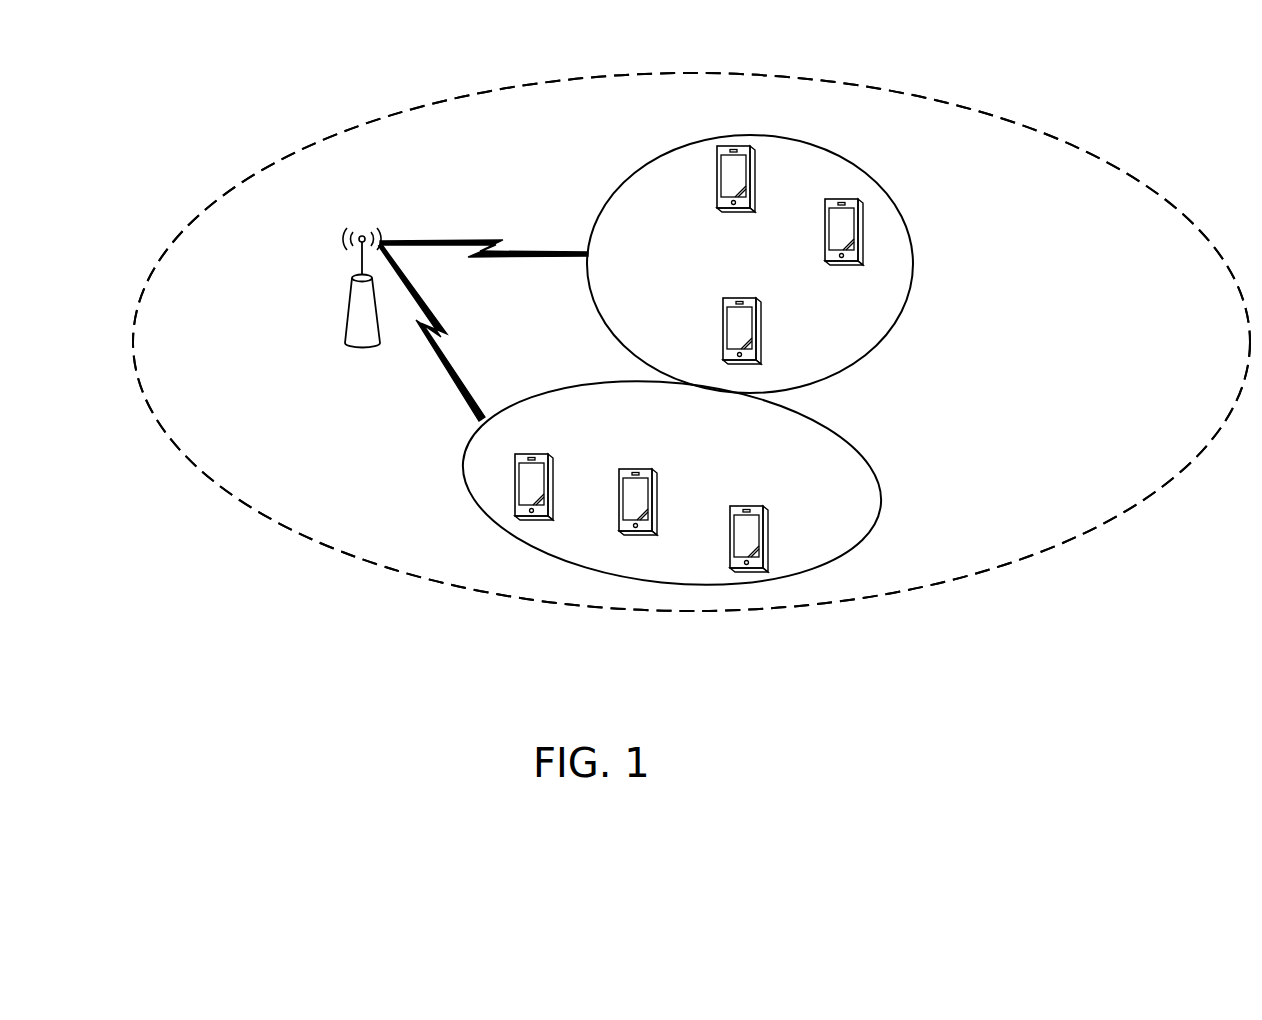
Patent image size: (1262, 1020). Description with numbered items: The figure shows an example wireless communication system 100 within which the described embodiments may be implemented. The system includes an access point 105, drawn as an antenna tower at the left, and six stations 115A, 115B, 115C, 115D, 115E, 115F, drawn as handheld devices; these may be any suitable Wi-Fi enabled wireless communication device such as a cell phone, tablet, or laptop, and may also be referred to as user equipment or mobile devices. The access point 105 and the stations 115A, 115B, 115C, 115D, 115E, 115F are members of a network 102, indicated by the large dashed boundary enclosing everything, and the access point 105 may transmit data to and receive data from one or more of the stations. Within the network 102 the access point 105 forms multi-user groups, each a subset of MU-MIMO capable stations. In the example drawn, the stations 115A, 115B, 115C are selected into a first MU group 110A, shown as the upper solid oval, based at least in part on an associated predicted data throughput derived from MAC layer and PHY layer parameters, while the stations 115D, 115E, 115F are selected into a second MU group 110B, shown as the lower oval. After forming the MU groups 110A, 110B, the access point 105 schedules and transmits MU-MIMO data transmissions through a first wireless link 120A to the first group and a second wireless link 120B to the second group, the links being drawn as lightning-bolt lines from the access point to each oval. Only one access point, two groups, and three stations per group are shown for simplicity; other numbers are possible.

The wireless communication system 100 is at (1052, 78).
The network 102 is at (670, 612).
The access point 105 is at (345, 330).
The MU group 110A is at (913, 286).
The MU group 110B is at (877, 493).
The station 115A is at (747, 146).
The station 115B is at (850, 199).
The station 115C is at (736, 298).
The station 115D is at (531, 454).
The station 115E is at (638, 469).
The station 115F is at (752, 506).
The wireless link 120A is at (493, 240).
The wireless link 120B is at (437, 358).